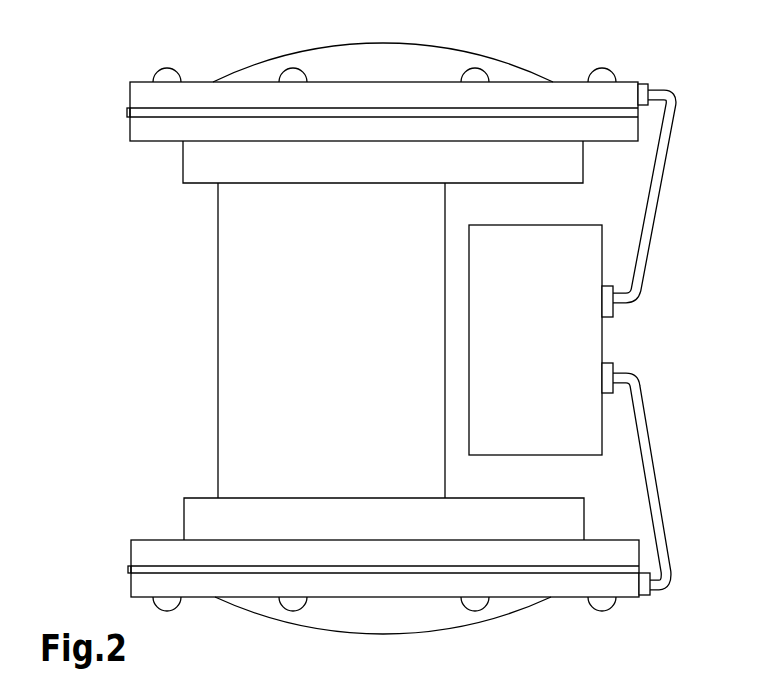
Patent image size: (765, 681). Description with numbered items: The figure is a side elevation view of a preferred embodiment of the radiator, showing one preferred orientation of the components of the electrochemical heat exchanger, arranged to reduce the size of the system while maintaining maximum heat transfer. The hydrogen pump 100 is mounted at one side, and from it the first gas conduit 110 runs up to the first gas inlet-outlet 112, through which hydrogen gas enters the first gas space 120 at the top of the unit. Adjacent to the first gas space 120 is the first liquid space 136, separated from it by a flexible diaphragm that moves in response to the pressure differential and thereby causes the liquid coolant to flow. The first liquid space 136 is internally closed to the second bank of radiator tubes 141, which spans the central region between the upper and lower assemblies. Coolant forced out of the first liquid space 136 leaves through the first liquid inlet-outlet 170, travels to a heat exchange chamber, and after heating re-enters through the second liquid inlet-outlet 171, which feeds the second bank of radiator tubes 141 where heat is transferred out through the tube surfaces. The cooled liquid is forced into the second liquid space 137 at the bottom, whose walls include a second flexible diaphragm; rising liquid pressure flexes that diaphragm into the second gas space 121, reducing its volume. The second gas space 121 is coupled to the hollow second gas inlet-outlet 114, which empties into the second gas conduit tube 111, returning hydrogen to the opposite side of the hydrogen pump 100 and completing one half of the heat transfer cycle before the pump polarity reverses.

The hydrogen pump 100 is at (602, 338).
The first gas conduit 110 is at (657, 195).
The second gas conduit tube 111 is at (657, 462).
The first gas inlet-outlet 112 is at (645, 84).
The second gas inlet-outlet 114 is at (645, 596).
The first gas space 120 is at (413, 62).
The second gas space 121 is at (378, 615).
The first liquid space 136 is at (197, 159).
The second liquid space 137 is at (203, 528).
The second bank of radiator tubes 141 is at (262, 338).
The first liquid inlet-outlet 170 is at (377, 153).
The second liquid inlet-outlet 171 is at (358, 523).